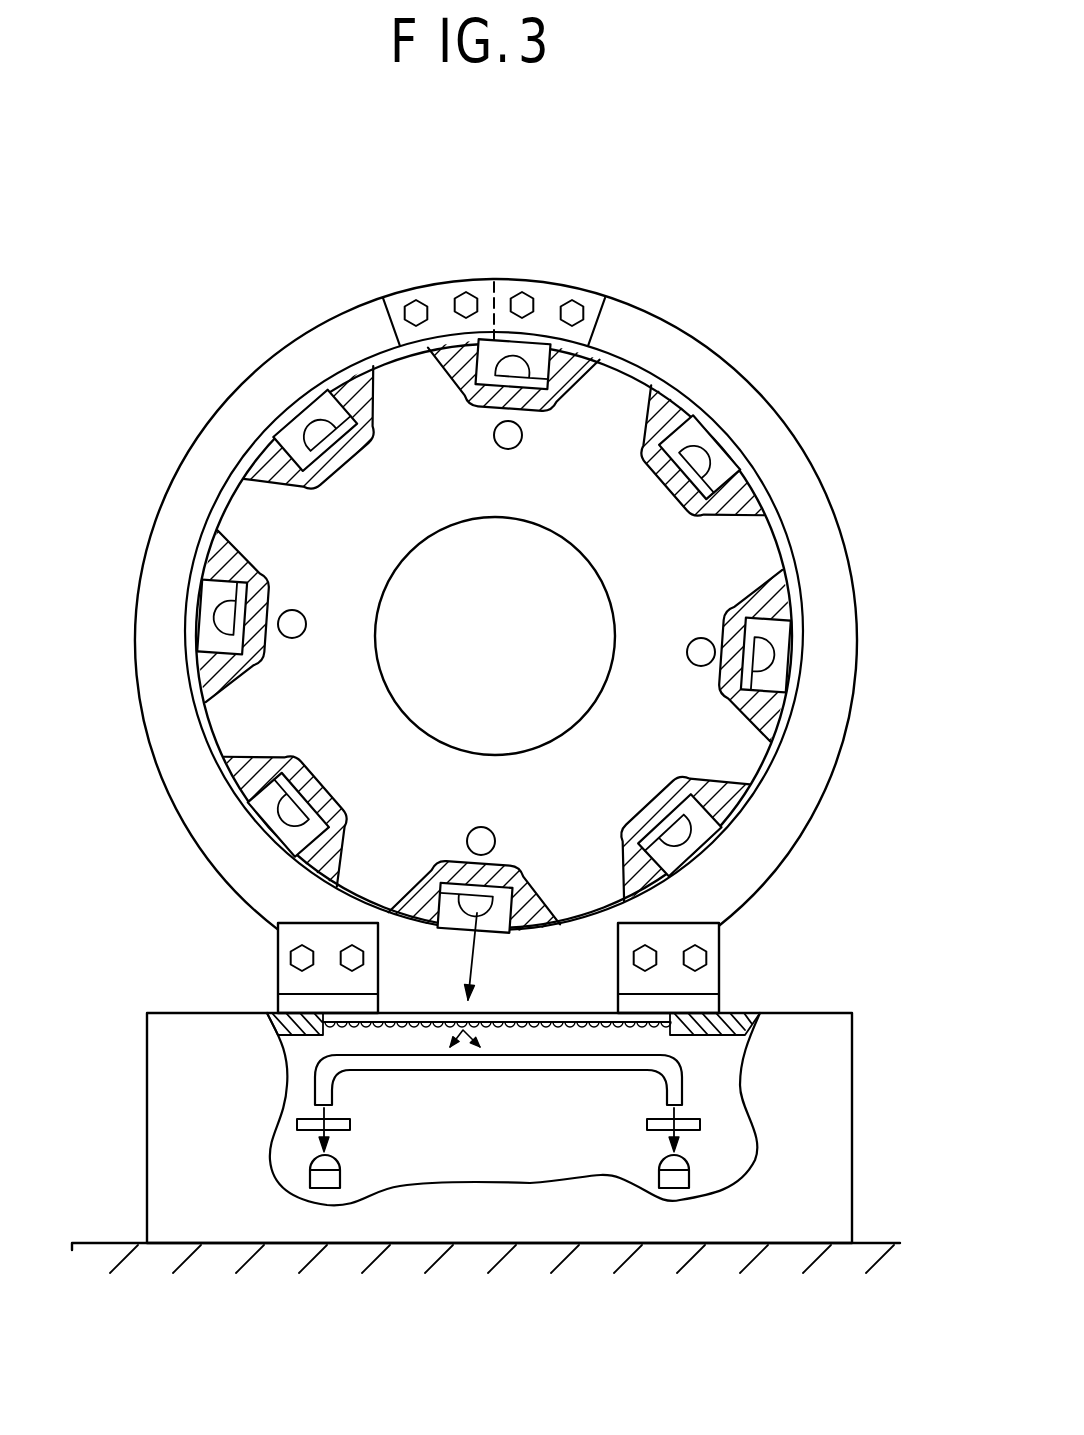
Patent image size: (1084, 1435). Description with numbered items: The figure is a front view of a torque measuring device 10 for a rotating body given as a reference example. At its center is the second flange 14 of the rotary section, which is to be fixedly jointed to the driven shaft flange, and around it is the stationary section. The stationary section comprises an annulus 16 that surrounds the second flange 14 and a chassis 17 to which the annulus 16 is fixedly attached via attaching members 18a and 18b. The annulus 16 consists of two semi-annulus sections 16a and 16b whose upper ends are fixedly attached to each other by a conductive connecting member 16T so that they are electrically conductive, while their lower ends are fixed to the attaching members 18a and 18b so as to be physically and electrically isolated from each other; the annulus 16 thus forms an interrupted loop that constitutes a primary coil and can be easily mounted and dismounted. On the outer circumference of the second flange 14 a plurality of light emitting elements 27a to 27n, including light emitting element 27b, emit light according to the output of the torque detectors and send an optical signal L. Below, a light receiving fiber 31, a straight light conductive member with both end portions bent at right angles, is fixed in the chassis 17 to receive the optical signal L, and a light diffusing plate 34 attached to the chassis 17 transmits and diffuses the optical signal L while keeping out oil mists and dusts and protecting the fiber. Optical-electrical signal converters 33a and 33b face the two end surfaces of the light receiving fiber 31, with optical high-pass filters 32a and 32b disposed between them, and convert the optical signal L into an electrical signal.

The torque measuring device 10 is at (193, 295).
The second flange 14 is at (750, 550).
The annulus 16 is at (660, 213).
The semi-annulus section 16a is at (368, 323).
The semi-annulus section 16b is at (618, 313).
The conductive connecting member 16T is at (607, 333).
The light emitting element 27a is at (530, 377).
The light emitting element 27b is at (710, 457).
The light emitting element 27n is at (317, 432).
The attaching member 18a is at (283, 976).
The attaching member 18b is at (715, 938).
The chassis 17 is at (835, 1065).
The light diffusing plate 34 is at (537, 1013).
The optical signal L is at (484, 956).
The light receiving fiber 31 is at (523, 1067).
The optical high-pass filter 32a is at (307, 1130).
The optical high-pass filter 32b is at (692, 1130).
The optical-electrical signal converter 33a is at (325, 1188).
The optical-electrical signal converter 33b is at (674, 1188).